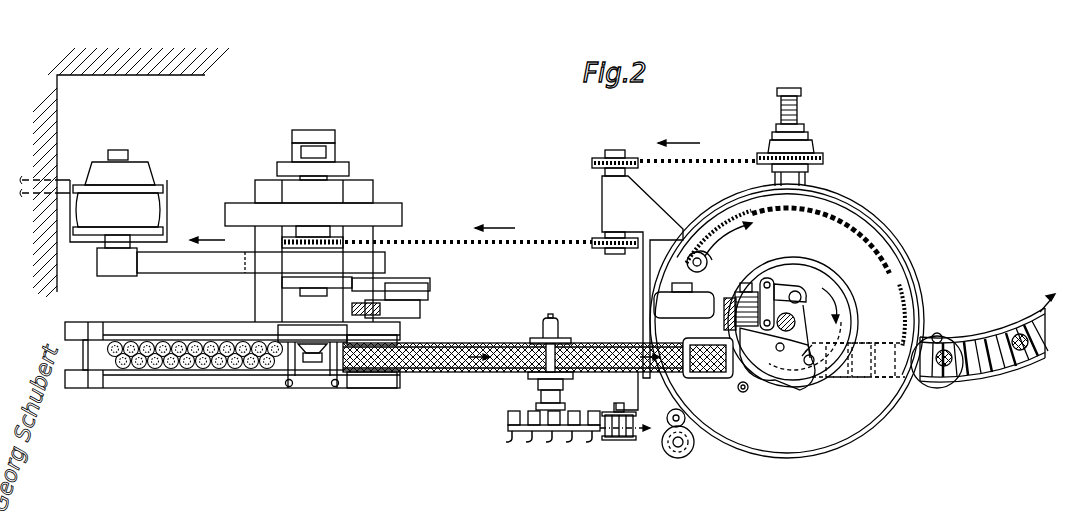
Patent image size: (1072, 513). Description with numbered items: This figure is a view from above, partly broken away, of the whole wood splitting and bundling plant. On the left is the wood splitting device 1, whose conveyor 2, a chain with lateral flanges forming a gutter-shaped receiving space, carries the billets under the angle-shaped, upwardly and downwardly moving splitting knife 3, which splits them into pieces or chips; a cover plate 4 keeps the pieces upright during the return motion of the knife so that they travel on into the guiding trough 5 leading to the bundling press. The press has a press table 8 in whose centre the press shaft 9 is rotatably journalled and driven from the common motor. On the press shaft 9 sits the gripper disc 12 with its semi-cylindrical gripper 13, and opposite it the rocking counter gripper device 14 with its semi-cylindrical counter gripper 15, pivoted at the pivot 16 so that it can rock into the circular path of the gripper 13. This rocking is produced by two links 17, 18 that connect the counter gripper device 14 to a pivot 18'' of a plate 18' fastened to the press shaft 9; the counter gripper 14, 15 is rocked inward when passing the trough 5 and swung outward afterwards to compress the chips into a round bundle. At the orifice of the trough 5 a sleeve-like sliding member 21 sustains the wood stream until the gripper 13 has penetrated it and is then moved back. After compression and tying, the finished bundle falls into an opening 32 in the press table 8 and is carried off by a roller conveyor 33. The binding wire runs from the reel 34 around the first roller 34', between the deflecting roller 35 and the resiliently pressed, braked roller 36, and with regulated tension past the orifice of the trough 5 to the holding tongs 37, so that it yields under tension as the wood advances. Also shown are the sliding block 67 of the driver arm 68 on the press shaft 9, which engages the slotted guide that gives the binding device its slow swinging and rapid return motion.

The wood splitting device 1 is at (262, 289).
The conveyor 2 is at (167, 388).
The splitting knife 3 is at (298, 362).
The cover plate 4 is at (340, 387).
The guiding trough 5 is at (482, 362).
The press table 8 is at (817, 442).
The press shaft 9 is at (797, 323).
The gripper disc 12 is at (828, 300).
The gripper 13 is at (776, 400).
The counter gripper device 14 is at (728, 278).
The counter gripper 15 is at (760, 388).
The pivot 16 is at (802, 392).
The link 17 is at (769, 282).
The link 18 is at (817, 271).
The plate 18' is at (810, 305).
The pivot 18'' is at (800, 292).
The sliding member 21 is at (707, 392).
The opening 32 is at (806, 352).
The roller conveyor 33 is at (985, 371).
The reel 34 is at (531, 428).
The first roller 34' is at (607, 419).
The deflecting roller 35 is at (668, 422).
The roller 36 is at (675, 450).
The holding tongs 37 is at (697, 321).
The sliding block 67 is at (808, 351).
The driver arm 68 is at (839, 345).